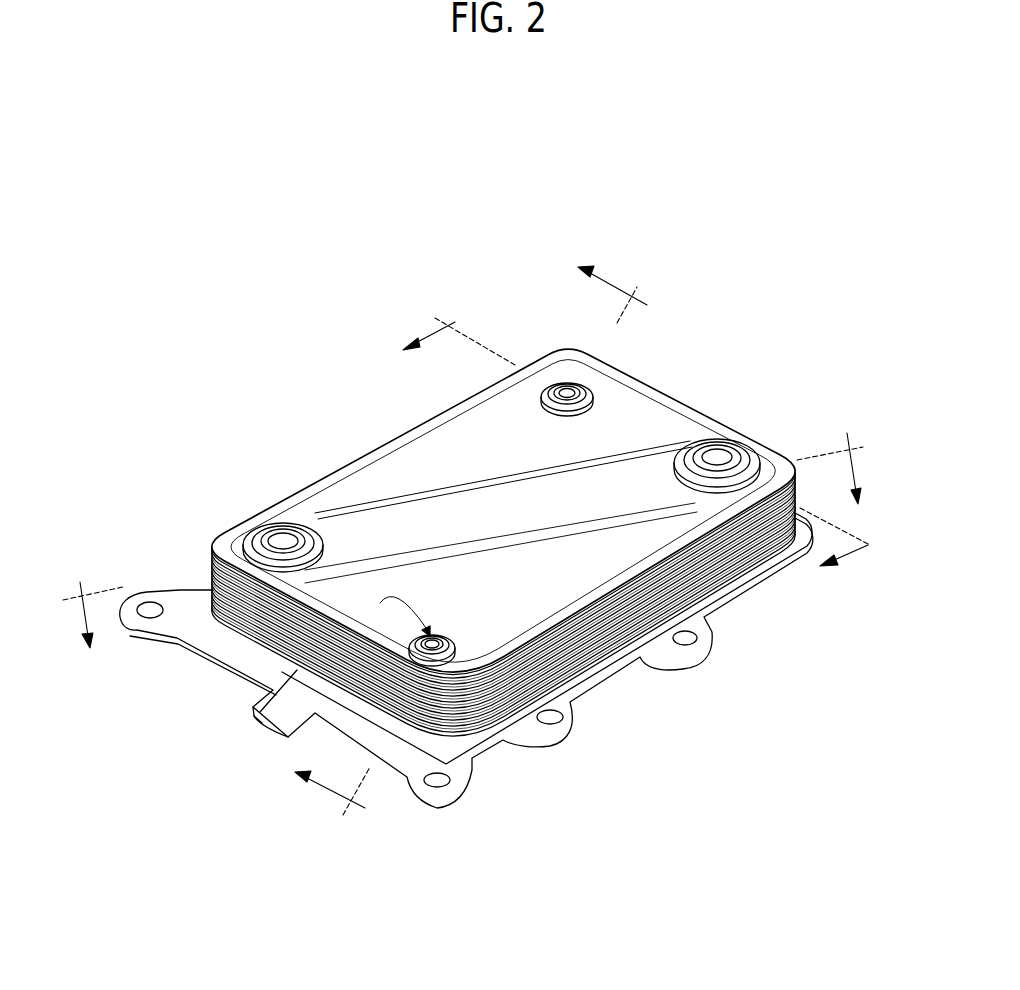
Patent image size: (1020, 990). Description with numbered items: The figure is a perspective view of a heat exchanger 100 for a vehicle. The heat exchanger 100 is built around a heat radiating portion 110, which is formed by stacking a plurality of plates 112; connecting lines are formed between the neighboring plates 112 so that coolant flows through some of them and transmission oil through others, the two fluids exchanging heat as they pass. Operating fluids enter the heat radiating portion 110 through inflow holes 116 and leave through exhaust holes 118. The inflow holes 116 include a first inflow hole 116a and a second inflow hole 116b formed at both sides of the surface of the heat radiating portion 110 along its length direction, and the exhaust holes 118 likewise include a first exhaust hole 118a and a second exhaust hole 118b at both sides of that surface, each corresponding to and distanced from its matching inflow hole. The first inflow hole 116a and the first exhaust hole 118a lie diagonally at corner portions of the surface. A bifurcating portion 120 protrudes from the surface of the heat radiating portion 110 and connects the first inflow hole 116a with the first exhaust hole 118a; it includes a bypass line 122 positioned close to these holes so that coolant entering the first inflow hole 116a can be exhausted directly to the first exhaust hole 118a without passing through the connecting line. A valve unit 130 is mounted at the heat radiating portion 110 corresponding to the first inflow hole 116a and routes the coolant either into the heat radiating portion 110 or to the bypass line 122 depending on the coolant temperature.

The heat exchanger 100 is at (510, 147).
The heat radiating portion 110 is at (408, 417).
The plate 112 is at (640, 652).
The inflow hole 116 is at (572, 698).
The first inflow hole 116a is at (707, 428).
The second inflow hole 116b is at (262, 714).
The exhaust hole 118 is at (318, 510).
The first exhaust hole 118a is at (277, 535).
The second exhaust hole 118b is at (567, 378).
The bifurcating portion 120 is at (390, 517).
The bypass line 122 is at (710, 450).
The valve unit 130 is at (738, 450).